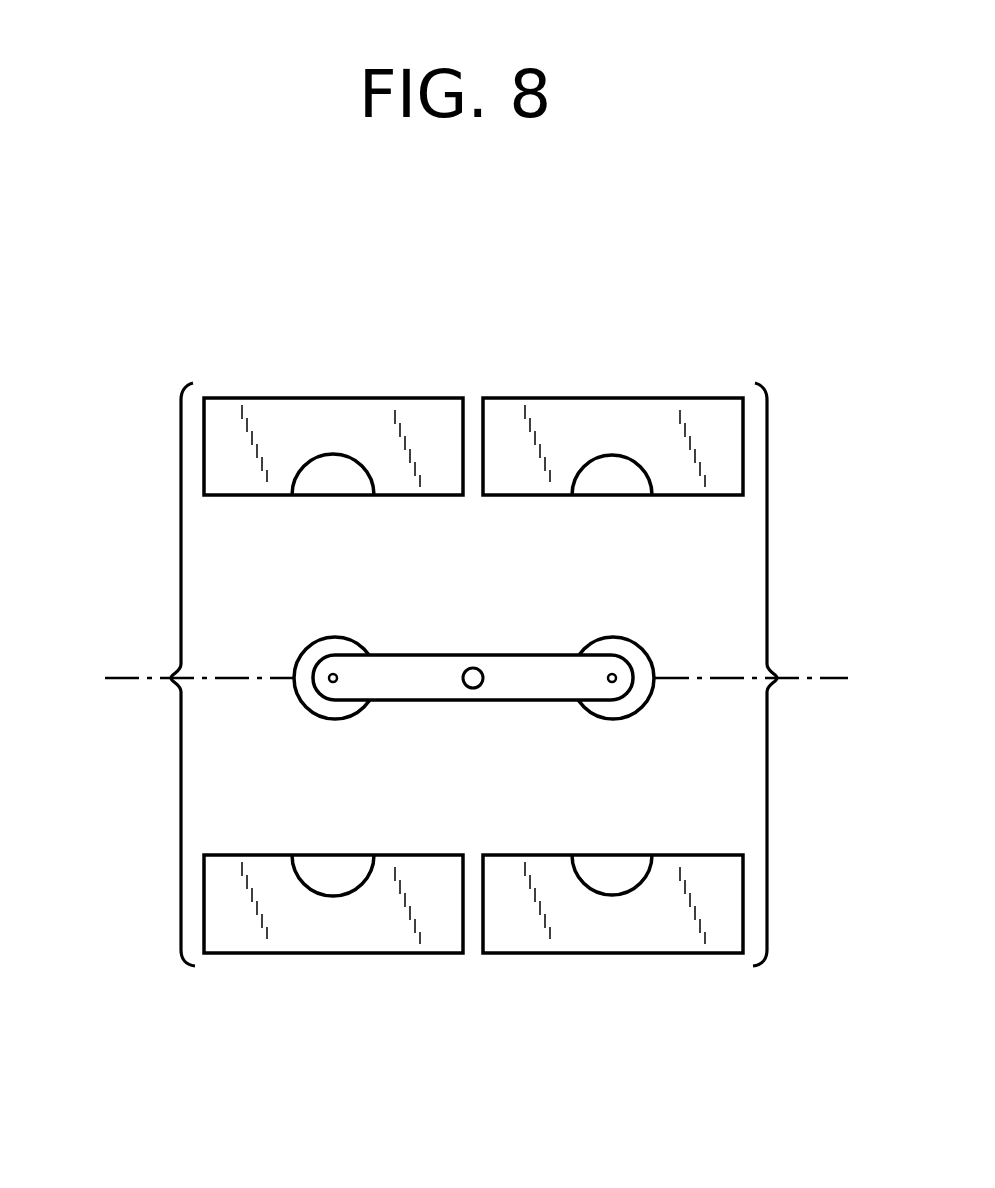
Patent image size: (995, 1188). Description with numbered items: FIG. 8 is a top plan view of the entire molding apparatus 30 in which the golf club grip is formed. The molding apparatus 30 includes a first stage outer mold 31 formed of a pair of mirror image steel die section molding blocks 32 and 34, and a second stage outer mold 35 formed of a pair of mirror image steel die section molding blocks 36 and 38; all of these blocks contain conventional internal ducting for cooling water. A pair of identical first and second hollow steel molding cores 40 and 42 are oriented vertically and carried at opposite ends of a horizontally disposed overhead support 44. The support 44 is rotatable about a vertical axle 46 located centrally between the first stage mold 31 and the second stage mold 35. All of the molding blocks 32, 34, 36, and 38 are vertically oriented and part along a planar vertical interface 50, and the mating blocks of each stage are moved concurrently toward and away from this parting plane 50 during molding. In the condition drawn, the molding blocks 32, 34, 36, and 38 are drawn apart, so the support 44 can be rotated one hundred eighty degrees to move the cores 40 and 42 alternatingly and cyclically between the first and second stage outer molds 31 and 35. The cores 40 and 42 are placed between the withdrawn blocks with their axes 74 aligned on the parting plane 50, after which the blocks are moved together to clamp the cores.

The molding apparatus 30 is at (647, 277).
The first stage outer mold 31 is at (783, 677).
The molding block 32 is at (638, 943).
The molding block 34 is at (607, 410).
The second stage outer mold 35 is at (170, 628).
The molding block 36 is at (333, 943).
The molding block 38 is at (322, 410).
The first hollow steel molding core 40 is at (630, 640).
The second hollow steel molding core 42 is at (300, 658).
The overhead support 44 is at (532, 667).
The vertical axle 46 is at (480, 686).
The parting plane 50 is at (840, 678).
The core axes 74 is at (330, 682).